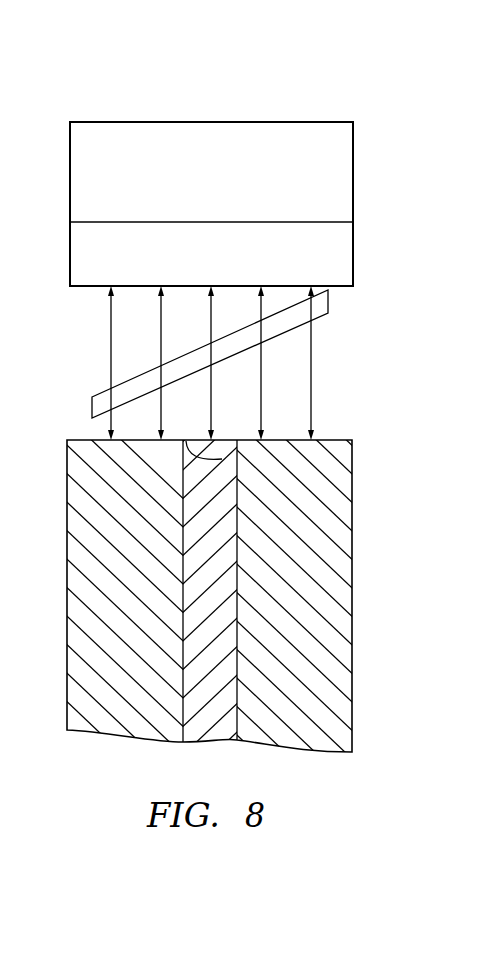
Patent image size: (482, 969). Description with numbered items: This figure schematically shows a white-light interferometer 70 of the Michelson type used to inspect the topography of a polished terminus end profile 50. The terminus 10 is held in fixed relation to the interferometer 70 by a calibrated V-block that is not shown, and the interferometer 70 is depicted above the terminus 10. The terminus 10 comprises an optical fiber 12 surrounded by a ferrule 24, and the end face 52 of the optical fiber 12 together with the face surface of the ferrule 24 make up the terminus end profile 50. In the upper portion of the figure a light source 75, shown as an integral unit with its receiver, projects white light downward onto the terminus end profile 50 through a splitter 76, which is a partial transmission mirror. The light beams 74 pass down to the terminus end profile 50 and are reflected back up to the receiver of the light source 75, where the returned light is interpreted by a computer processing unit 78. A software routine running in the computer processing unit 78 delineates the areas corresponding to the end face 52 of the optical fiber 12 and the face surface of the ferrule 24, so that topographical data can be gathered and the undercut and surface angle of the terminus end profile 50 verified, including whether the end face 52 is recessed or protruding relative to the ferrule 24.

The terminus 10 is at (257, 604).
The optical fiber 12 is at (218, 728).
The ferrule 24 is at (341, 571).
The terminus end profile 50 is at (257, 604).
The end face 52 is at (216, 455).
The interferometer 70 is at (263, 204).
The light beams 74 is at (183, 434).
The light source 75 is at (76, 251).
The splitter 76 is at (98, 394).
The computer processing unit 78 is at (132, 126).